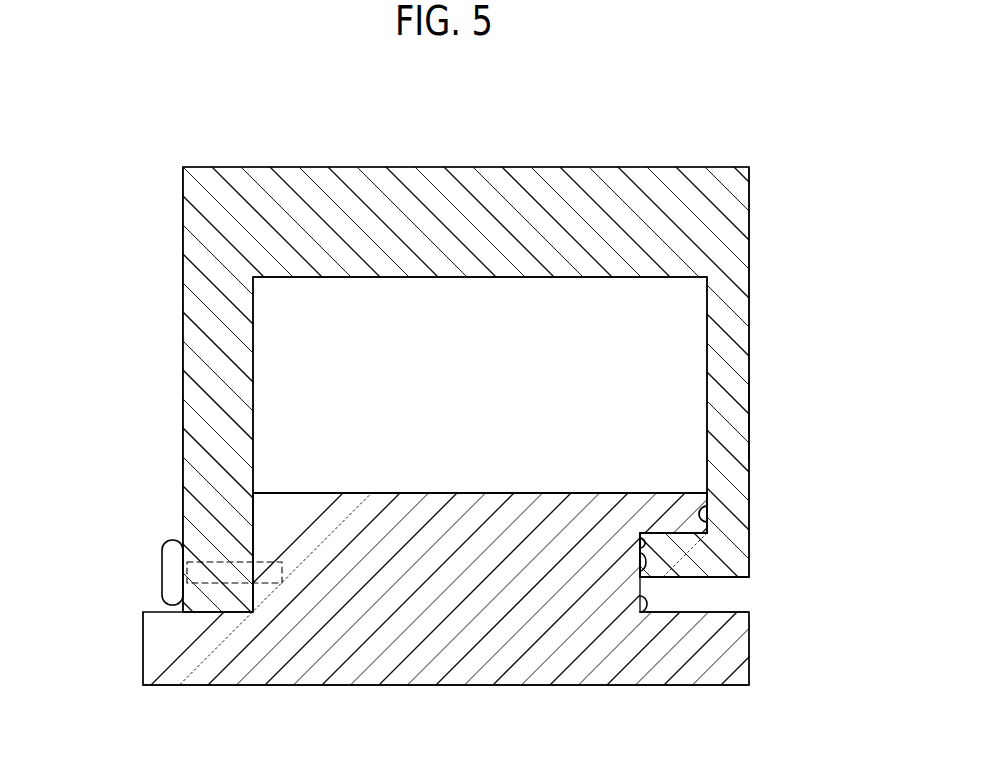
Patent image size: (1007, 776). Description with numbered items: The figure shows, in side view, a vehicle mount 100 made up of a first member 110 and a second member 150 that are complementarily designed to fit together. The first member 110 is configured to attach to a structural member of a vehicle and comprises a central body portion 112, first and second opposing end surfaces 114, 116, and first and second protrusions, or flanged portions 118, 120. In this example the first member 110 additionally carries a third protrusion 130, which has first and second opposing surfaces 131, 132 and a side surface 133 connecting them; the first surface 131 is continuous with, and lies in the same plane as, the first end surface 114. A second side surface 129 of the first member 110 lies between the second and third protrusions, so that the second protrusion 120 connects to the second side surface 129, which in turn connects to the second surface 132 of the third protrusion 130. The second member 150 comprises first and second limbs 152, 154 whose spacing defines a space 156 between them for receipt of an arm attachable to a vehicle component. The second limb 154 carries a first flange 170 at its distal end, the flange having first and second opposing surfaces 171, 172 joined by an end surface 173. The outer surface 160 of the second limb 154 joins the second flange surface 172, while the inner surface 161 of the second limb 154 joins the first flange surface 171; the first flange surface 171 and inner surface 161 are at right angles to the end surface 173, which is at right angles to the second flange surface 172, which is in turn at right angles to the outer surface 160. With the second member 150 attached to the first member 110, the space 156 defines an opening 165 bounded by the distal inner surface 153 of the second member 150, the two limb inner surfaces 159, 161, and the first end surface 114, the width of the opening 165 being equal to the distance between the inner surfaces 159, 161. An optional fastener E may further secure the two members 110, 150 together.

The vehicle mount 100 is at (247, 128).
The first member 110 is at (252, 648).
The raised central portion of base 112 is at (466, 592).
The first end surface 114 is at (473, 493).
The second end surface 116 is at (368, 687).
The first protrusion 118 is at (192, 643).
The second protrusion 120 is at (707, 652).
The second side surface 129 is at (642, 596).
The third protrusion 130 is at (672, 517).
The first surface of the third protrusion 131 is at (677, 491).
The second surface of the third protrusion 132 is at (638, 547).
The side surface of the third protrusion 133 is at (700, 511).
The second member 150 is at (583, 213).
The first limb 152 is at (215, 322).
The distal inner surface 153 is at (482, 278).
The second limb 154 is at (727, 352).
The space 156 is at (368, 417).
The first limb inner surface 159 is at (253, 425).
The outer surface of the second limb 160 is at (752, 421).
The inner surface of the second limb 161 is at (707, 328).
The opening 165 is at (492, 394).
The first flange 170 is at (683, 562).
The first flange surface 171 is at (630, 537).
The second flange surface 172 is at (718, 578).
The end surface of the flange 173 is at (640, 566).
The fastener E is at (173, 556).